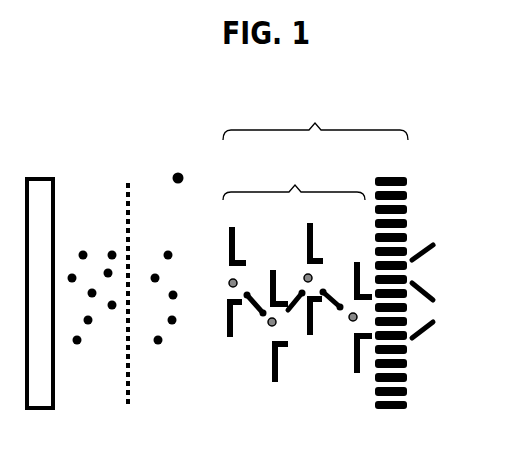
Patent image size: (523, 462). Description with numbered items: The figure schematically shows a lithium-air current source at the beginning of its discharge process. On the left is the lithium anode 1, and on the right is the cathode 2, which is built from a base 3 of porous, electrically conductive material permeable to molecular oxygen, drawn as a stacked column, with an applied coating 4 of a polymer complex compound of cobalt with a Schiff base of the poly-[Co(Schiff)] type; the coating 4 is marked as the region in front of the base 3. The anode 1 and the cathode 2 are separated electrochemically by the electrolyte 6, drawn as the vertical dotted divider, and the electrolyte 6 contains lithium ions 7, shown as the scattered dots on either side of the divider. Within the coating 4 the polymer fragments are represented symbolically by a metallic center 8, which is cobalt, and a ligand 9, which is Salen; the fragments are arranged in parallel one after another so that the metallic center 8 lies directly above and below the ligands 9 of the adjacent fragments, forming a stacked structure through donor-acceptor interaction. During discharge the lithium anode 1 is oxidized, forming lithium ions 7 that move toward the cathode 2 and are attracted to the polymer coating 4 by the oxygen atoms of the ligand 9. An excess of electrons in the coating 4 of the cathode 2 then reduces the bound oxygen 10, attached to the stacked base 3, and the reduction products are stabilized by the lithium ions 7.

The lithium anode 1 is at (38, 193).
The cathode 2 is at (315, 115).
The base 3 is at (410, 195).
The coating 4 is at (294, 175).
The electrolyte 6 is at (127, 373).
The lithium ions 7 is at (85, 250).
The metallic center 8 is at (230, 287).
The ligand 9 is at (180, 172).
The bound oxygen 10 is at (428, 285).